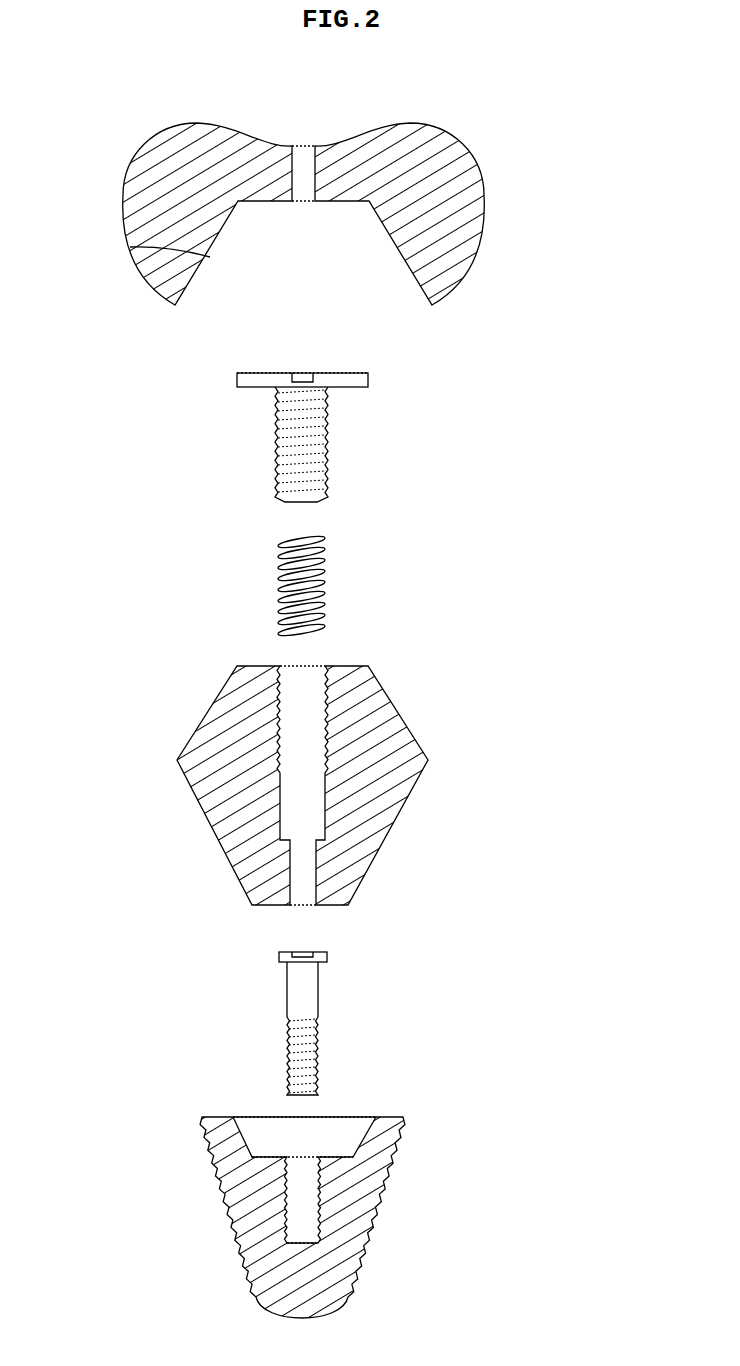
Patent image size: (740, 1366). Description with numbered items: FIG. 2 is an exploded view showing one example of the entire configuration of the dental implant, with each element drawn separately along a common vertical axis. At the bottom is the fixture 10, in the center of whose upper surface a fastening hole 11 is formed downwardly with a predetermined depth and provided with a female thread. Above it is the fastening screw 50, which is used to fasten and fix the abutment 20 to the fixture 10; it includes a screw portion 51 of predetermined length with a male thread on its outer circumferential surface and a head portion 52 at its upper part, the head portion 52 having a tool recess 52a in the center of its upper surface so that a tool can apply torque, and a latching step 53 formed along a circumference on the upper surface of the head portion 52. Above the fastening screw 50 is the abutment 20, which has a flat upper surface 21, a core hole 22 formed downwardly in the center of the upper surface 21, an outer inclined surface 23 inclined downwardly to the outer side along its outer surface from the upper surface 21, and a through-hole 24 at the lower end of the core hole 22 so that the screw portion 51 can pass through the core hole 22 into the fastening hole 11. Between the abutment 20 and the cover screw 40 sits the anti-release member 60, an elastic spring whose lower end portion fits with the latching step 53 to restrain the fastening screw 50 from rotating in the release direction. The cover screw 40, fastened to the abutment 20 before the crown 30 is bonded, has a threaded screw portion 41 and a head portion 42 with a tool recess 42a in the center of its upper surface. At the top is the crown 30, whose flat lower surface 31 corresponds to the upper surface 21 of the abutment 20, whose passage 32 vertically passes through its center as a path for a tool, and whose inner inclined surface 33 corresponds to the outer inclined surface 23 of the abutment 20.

The fixture 10 is at (213, 1208).
The fastening hole 11 is at (318, 1195).
The abutment 20 is at (400, 798).
The upper surface 21 is at (263, 666).
The core hole 22 is at (277, 717).
The outer inclined surface 23 is at (400, 705).
The through-hole 24 is at (287, 867).
The crown 30 is at (505, 182).
The lower surface 31 is at (333, 203).
The passage 32 is at (295, 152).
The inner inclined surface 33 is at (130, 247).
The cover screw 40 is at (285, 405).
The screw portion 41 is at (320, 453).
The head portion 42 is at (358, 380).
The tool recess 42a is at (307, 375).
The fastening screw 50 is at (272, 1007).
The screw portion 51 is at (318, 1025).
The head portion 52 is at (327, 957).
The tool recess 52a is at (313, 953).
The latching step 53 is at (290, 953).
The anti-release member 60 is at (333, 580).